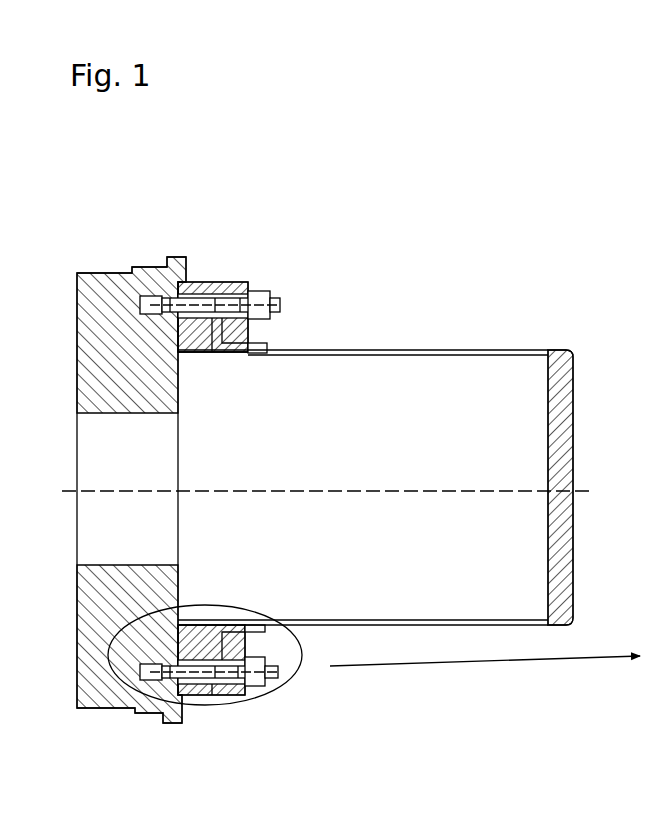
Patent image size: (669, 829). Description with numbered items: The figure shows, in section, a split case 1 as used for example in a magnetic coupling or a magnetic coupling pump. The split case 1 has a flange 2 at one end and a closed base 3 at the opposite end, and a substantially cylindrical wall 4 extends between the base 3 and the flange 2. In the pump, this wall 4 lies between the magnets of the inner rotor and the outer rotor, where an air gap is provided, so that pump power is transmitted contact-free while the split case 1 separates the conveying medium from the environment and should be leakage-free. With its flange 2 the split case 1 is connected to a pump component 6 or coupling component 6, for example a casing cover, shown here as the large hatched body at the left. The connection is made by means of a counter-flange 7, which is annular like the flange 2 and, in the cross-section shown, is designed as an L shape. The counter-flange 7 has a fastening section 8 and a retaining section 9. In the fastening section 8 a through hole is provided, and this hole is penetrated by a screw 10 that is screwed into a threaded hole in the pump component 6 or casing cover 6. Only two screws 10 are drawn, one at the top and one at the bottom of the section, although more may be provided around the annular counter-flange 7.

The split case 1 is at (363, 262).
The flange 2 is at (200, 356).
The base 3 is at (548, 448).
The cylindrical wall 4 is at (370, 358).
The pump component 6 is at (158, 593).
The counter-flange 7 is at (203, 282).
The fastening section 8 is at (214, 281).
The retaining section 9 is at (250, 334).
The screw 10 is at (160, 292).